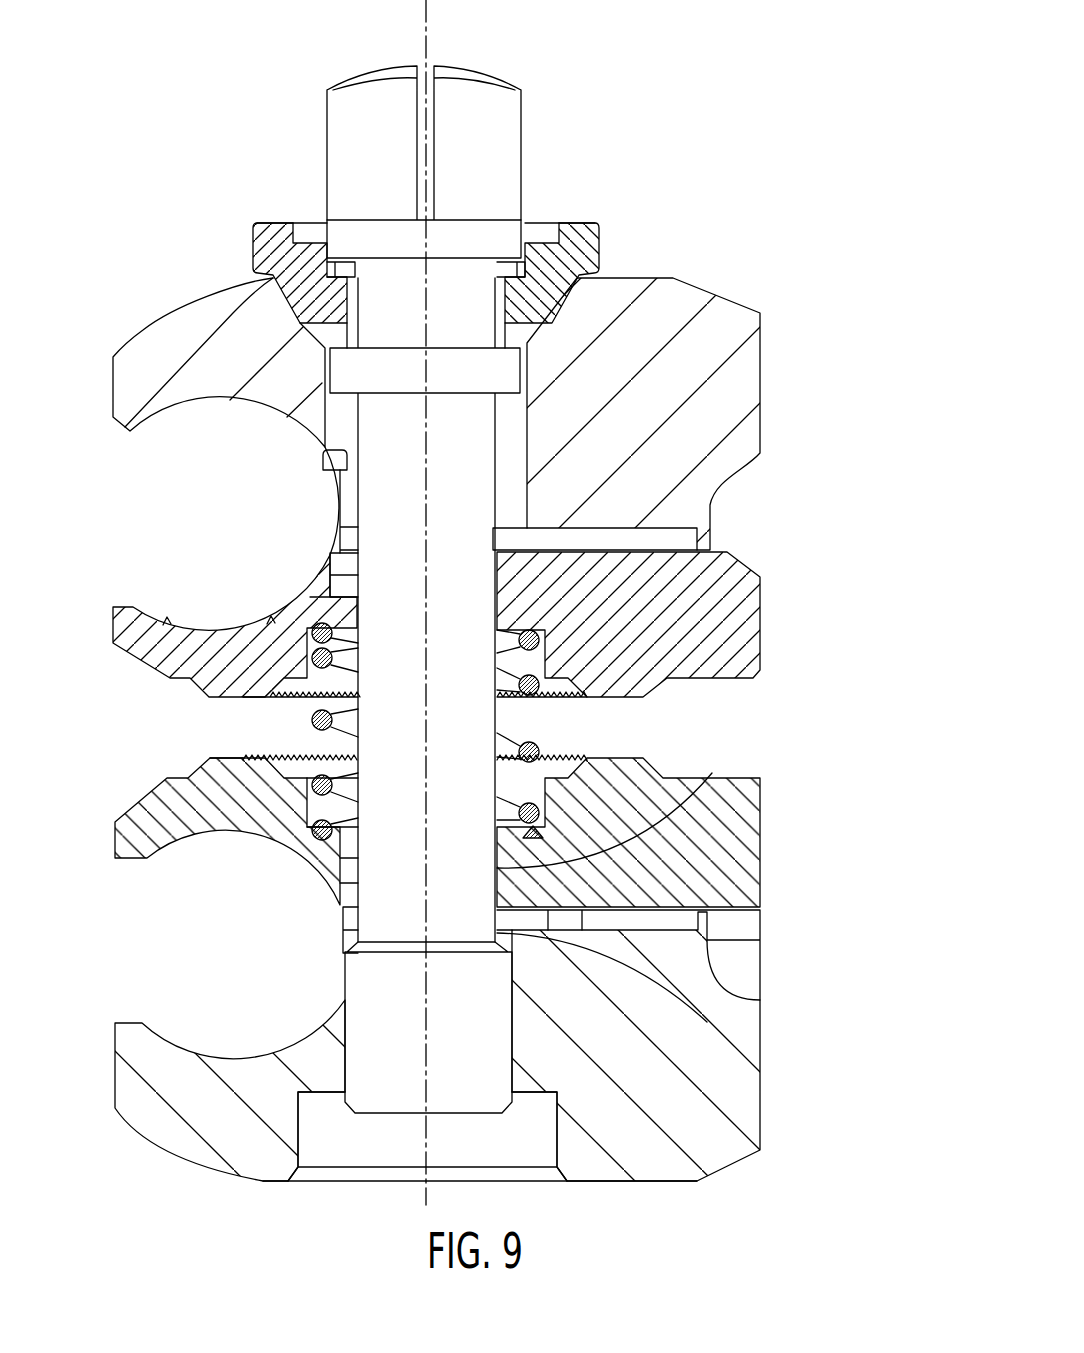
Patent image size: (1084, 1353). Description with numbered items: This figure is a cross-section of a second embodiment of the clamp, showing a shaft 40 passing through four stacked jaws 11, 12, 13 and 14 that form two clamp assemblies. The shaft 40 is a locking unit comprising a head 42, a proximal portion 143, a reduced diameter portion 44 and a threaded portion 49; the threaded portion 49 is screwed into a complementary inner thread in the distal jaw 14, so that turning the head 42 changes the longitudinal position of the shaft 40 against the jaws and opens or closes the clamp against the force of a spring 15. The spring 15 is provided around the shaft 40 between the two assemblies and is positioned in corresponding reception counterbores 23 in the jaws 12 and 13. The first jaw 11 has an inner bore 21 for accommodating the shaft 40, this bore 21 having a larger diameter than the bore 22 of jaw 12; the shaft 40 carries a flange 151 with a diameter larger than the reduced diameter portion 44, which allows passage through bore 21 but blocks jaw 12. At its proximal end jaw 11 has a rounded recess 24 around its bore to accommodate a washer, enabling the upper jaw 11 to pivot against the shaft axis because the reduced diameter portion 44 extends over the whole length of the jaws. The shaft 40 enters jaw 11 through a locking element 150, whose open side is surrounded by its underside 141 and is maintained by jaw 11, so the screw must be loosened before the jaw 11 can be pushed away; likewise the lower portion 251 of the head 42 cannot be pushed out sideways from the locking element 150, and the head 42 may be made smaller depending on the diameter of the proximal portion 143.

The first jaw 11 is at (748, 435).
The jaw 12 is at (735, 627).
The jaw 13 is at (730, 845).
The distal jaw 14 is at (720, 1095).
The spring 15 is at (540, 743).
The inner bore 21 is at (507, 453).
The bore 22 is at (357, 613).
The reception counterbore 23 is at (500, 867).
The rounded recess 24 is at (720, 1023).
The shaft 40 is at (430, 565).
The head 42 is at (507, 120).
The reduced diameter portion 44 is at (388, 487).
The thread portion 49 is at (367, 1002).
The underside 141 is at (237, 313).
The proximal portion 143 is at (453, 297).
The locking element 150 is at (580, 247).
The flange 151 is at (523, 372).
The lower portion of the head 251 is at (340, 240).